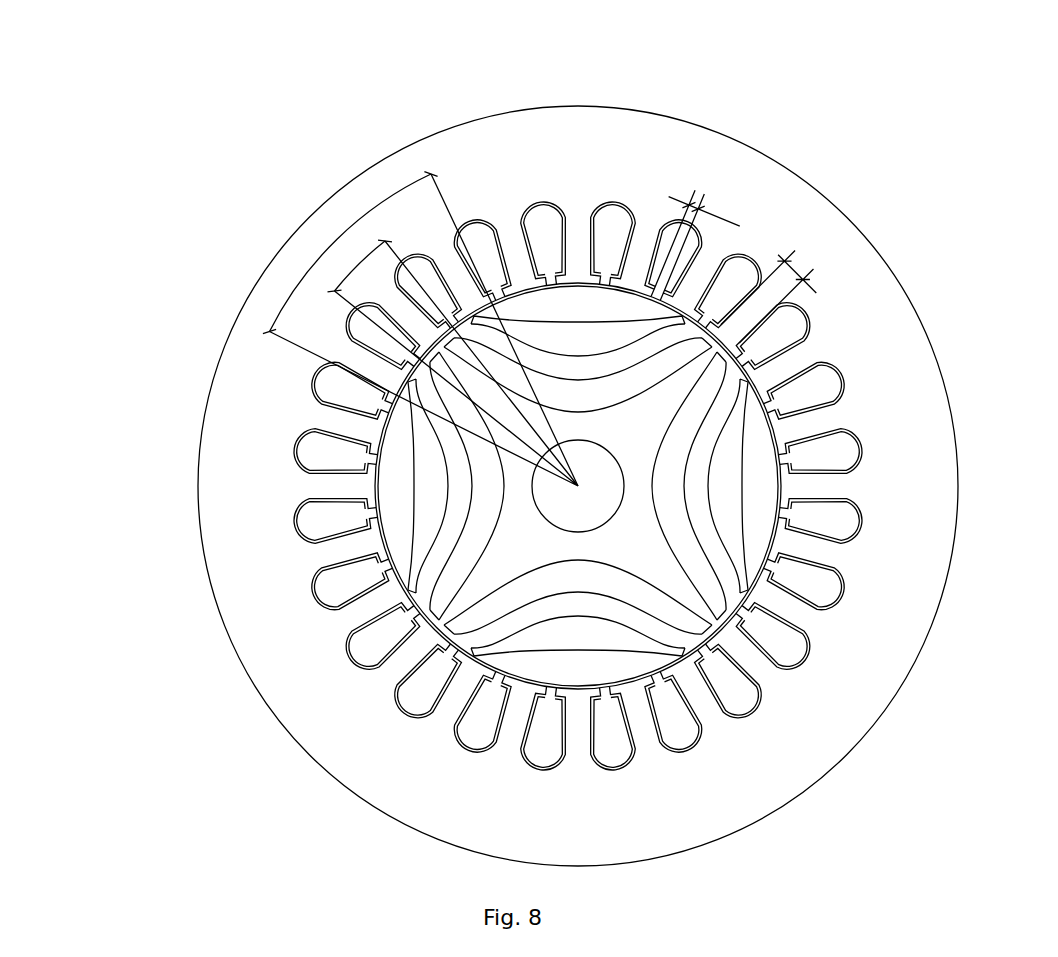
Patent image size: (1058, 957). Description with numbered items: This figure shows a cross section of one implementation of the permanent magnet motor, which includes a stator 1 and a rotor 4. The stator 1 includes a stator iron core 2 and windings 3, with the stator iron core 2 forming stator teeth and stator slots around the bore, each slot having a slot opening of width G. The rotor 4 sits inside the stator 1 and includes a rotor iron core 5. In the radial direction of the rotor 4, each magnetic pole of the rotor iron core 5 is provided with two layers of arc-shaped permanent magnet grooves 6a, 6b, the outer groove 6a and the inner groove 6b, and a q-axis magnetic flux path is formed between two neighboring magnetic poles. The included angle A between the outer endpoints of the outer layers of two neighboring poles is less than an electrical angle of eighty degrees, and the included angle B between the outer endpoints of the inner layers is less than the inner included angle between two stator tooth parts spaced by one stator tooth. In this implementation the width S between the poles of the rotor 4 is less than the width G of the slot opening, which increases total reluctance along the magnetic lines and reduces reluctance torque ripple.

The stator 1 is at (455, 124).
The stator iron core 2 is at (430, 175).
The windings 3 is at (450, 317).
The rotor 4 is at (268, 333).
The rotor iron core 5 is at (402, 477).
The outer layer permanent magnet groove 6a is at (420, 540).
The inner layer permanent magnet groove 6b is at (458, 571).